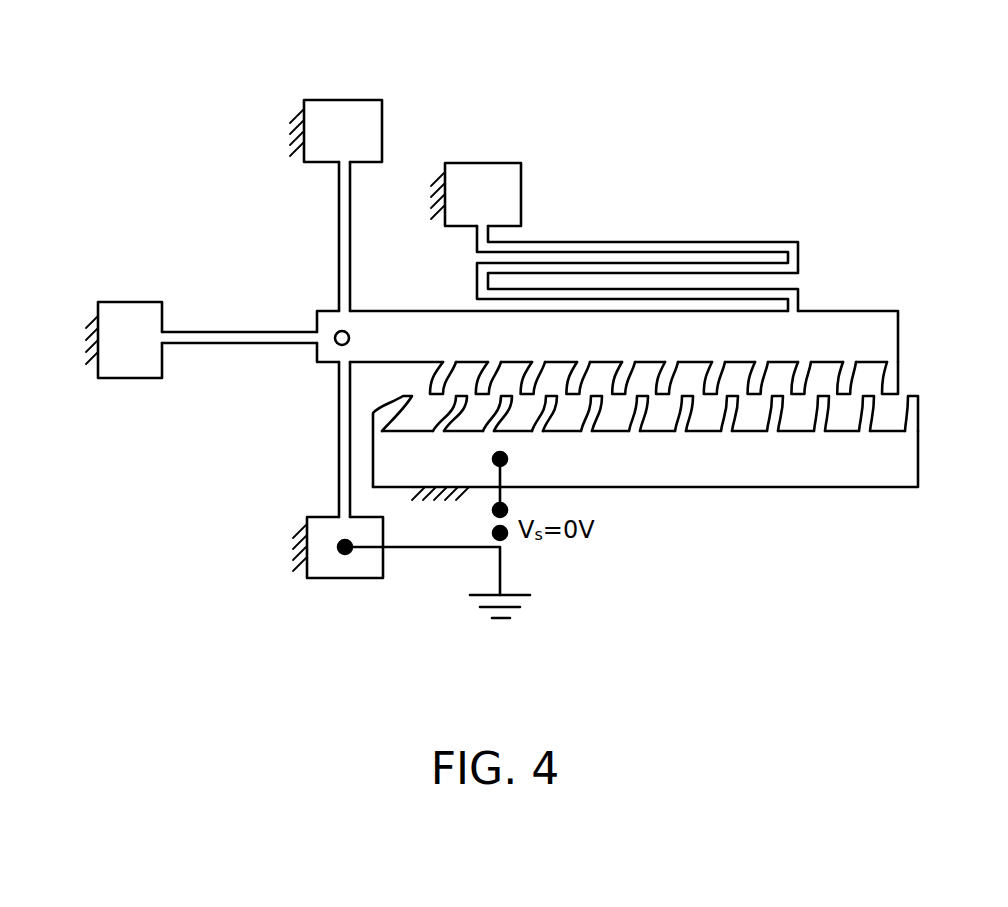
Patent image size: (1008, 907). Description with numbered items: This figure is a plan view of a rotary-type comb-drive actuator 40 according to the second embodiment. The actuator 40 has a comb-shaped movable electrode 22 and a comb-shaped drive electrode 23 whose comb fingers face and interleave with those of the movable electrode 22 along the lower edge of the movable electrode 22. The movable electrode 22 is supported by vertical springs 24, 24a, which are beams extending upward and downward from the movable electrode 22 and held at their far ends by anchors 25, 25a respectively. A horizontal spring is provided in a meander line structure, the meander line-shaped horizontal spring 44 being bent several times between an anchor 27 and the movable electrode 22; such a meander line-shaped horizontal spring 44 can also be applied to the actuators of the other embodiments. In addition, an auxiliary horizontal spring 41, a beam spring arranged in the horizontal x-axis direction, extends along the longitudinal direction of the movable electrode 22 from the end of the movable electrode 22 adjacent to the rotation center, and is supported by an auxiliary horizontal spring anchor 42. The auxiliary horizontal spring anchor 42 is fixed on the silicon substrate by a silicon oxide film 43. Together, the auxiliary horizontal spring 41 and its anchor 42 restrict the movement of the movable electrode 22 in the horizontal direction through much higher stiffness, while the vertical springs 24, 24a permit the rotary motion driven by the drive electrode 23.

The comb-shaped movable electrode 22 is at (845, 327).
The comb-shaped drive electrode 23 is at (773, 488).
The vertical spring 24 is at (339, 214).
The vertical spring 24a is at (339, 444).
The anchor 25 is at (343, 100).
The anchor 25a is at (341, 578).
The anchor 27 is at (482, 168).
The rotary-type comb-drive actuator 40 is at (600, 168).
The auxiliary horizontal spring 41 is at (228, 338).
The auxiliary horizontal spring anchor 42 is at (130, 304).
The silicon oxide film 43 is at (92, 321).
The meander line-shaped horizontal spring 44 is at (716, 242).